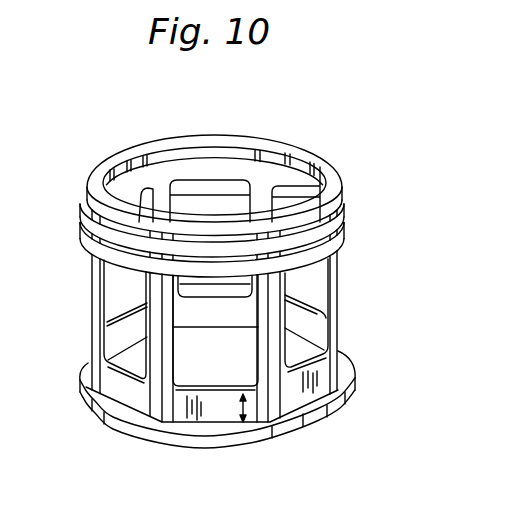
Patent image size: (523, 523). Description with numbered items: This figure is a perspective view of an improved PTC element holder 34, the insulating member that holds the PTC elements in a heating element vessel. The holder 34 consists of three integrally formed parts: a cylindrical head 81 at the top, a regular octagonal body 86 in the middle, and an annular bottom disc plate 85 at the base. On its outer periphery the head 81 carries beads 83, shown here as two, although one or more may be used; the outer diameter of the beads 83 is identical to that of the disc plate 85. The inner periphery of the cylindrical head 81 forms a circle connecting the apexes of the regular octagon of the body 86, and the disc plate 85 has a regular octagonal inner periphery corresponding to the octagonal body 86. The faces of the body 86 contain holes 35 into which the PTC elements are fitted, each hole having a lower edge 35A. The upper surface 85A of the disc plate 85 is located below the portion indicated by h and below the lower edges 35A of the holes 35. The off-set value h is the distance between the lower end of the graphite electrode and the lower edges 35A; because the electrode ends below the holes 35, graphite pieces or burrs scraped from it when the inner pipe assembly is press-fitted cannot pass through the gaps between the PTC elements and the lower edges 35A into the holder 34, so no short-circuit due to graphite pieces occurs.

The PTC element holder 34 is at (85, 156).
The cylindrical head 81 is at (343, 192).
The beads 83 is at (345, 208).
The holes 35 is at (322, 338).
The lower edges of the holes 35A is at (325, 382).
The regular octagonal body 86 is at (104, 383).
The upper surface of the disc plate 85A is at (352, 388).
The annular bottom disc plate 85 is at (328, 422).
The off-set value h is at (252, 407).